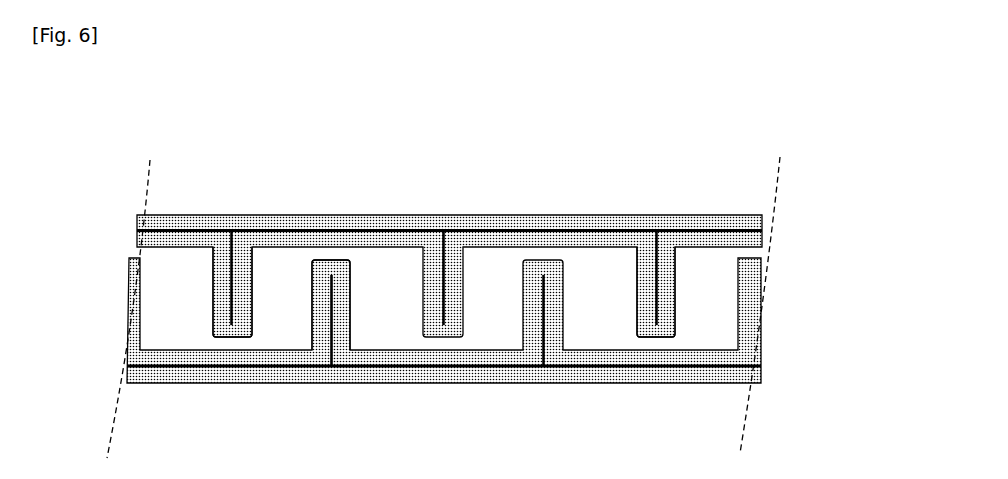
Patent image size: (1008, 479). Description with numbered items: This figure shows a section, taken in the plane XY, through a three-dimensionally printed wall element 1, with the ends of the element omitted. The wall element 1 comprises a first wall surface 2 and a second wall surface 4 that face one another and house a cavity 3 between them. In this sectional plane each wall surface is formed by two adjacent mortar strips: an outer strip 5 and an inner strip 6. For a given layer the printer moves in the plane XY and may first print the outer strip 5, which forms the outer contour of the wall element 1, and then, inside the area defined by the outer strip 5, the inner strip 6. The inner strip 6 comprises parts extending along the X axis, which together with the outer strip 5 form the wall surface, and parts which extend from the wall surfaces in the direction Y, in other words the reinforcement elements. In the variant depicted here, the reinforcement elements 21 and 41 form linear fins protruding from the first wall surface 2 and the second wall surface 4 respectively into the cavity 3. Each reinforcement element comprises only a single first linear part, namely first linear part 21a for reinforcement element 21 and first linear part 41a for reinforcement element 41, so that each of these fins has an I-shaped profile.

The wall element 1 is at (463, 176).
The first wall surface 2 is at (680, 234).
The reinforcement element 21 is at (213, 262).
The first linear part 21a is at (252, 288).
The cavity 3 is at (439, 298).
The second wall surface 4 is at (655, 368).
The reinforcement element 41 is at (312, 312).
The first linear part 41a is at (352, 312).
The outer strip 5 is at (765, 225).
The inner strip 6 is at (765, 240).